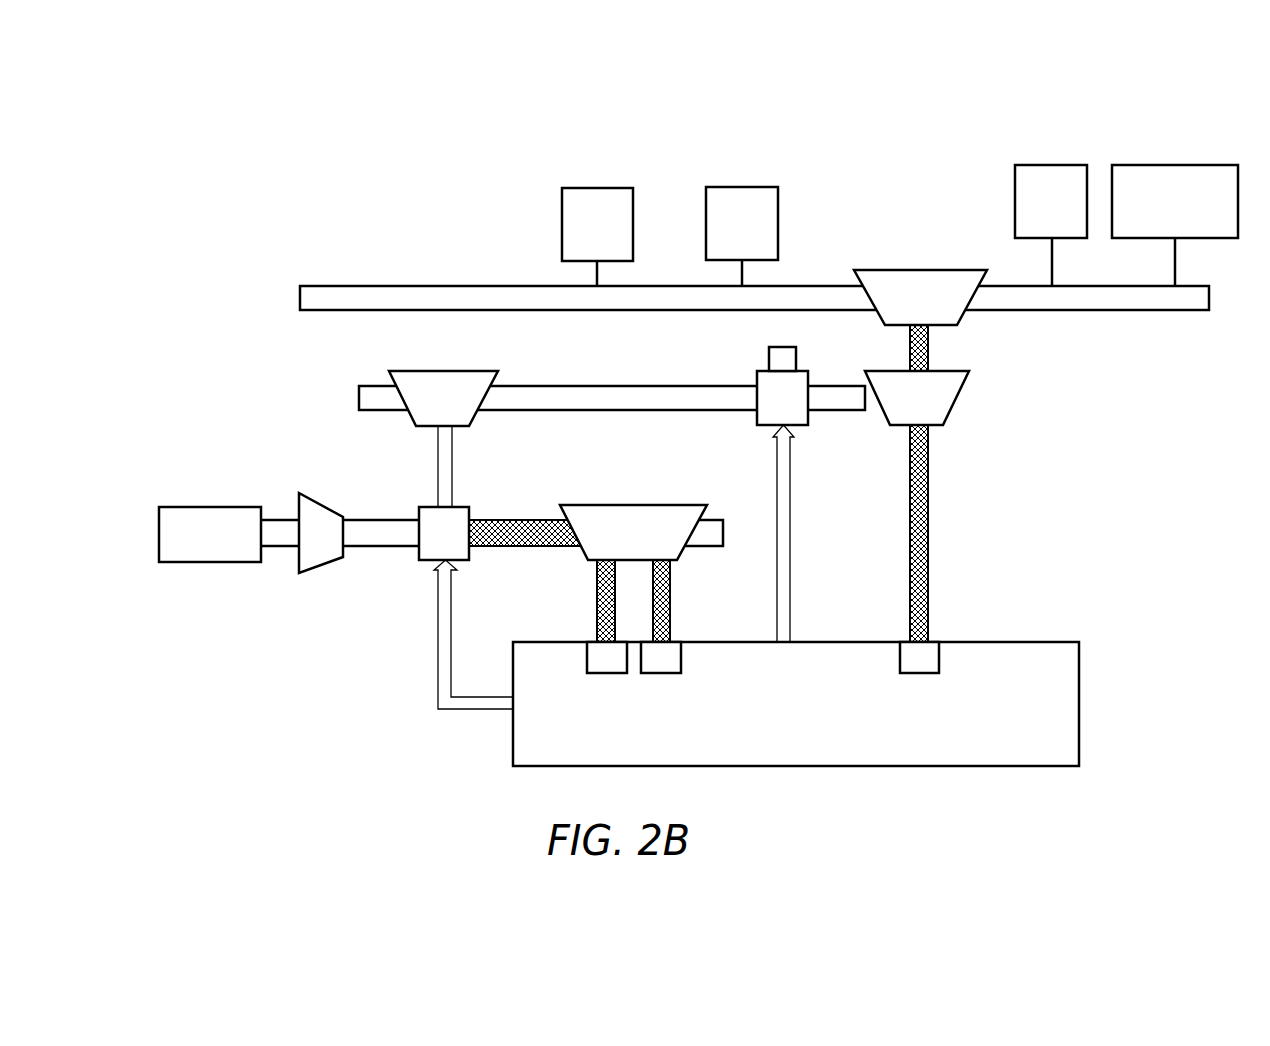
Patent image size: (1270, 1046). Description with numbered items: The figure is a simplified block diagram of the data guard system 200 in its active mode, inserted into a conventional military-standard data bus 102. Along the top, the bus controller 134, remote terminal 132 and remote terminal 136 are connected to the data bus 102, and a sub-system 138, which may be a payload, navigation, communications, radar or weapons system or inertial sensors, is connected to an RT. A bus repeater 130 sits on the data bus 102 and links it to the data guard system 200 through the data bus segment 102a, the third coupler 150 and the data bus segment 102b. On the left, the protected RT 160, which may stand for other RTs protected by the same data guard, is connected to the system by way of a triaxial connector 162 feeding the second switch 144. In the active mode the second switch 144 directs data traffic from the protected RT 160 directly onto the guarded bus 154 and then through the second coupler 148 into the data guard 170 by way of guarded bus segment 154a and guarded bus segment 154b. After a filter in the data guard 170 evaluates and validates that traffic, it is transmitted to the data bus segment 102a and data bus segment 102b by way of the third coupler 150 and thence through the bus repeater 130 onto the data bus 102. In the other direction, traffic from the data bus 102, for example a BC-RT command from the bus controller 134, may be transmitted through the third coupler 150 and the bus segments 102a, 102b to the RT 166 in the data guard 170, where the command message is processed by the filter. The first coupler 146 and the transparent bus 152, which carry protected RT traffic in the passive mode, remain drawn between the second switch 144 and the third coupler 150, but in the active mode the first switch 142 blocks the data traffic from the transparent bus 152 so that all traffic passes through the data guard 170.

The data guard system 200 is at (723, 123).
The MIL-STD-1553 data bus 102 is at (372, 286).
The MIL-STD-1553 data bus segment 102a is at (930, 337).
The data bus segment 102b is at (930, 455).
The bus repeater 130 is at (922, 270).
The remote terminal 132 is at (750, 187).
The bus controller 134 is at (600, 188).
The remote terminal 136 is at (1052, 165).
The sub-system 138 is at (1180, 165).
The first switch 142 is at (757, 380).
The second switch 144 is at (465, 507).
The first coupler 146 is at (450, 371).
The second coupler 148 is at (620, 505).
The third coupler 150 is at (962, 389).
The transparent bus 152 is at (590, 386).
The guarded bus 154 is at (497, 547).
The guarded bus segment 154a is at (597, 577).
The guarded bus segment 154b is at (670, 577).
The protected RT 160 is at (195, 507).
The triaxial connector 162 is at (323, 506).
The RT 166 is at (940, 658).
The data guard 170 is at (1057, 748).